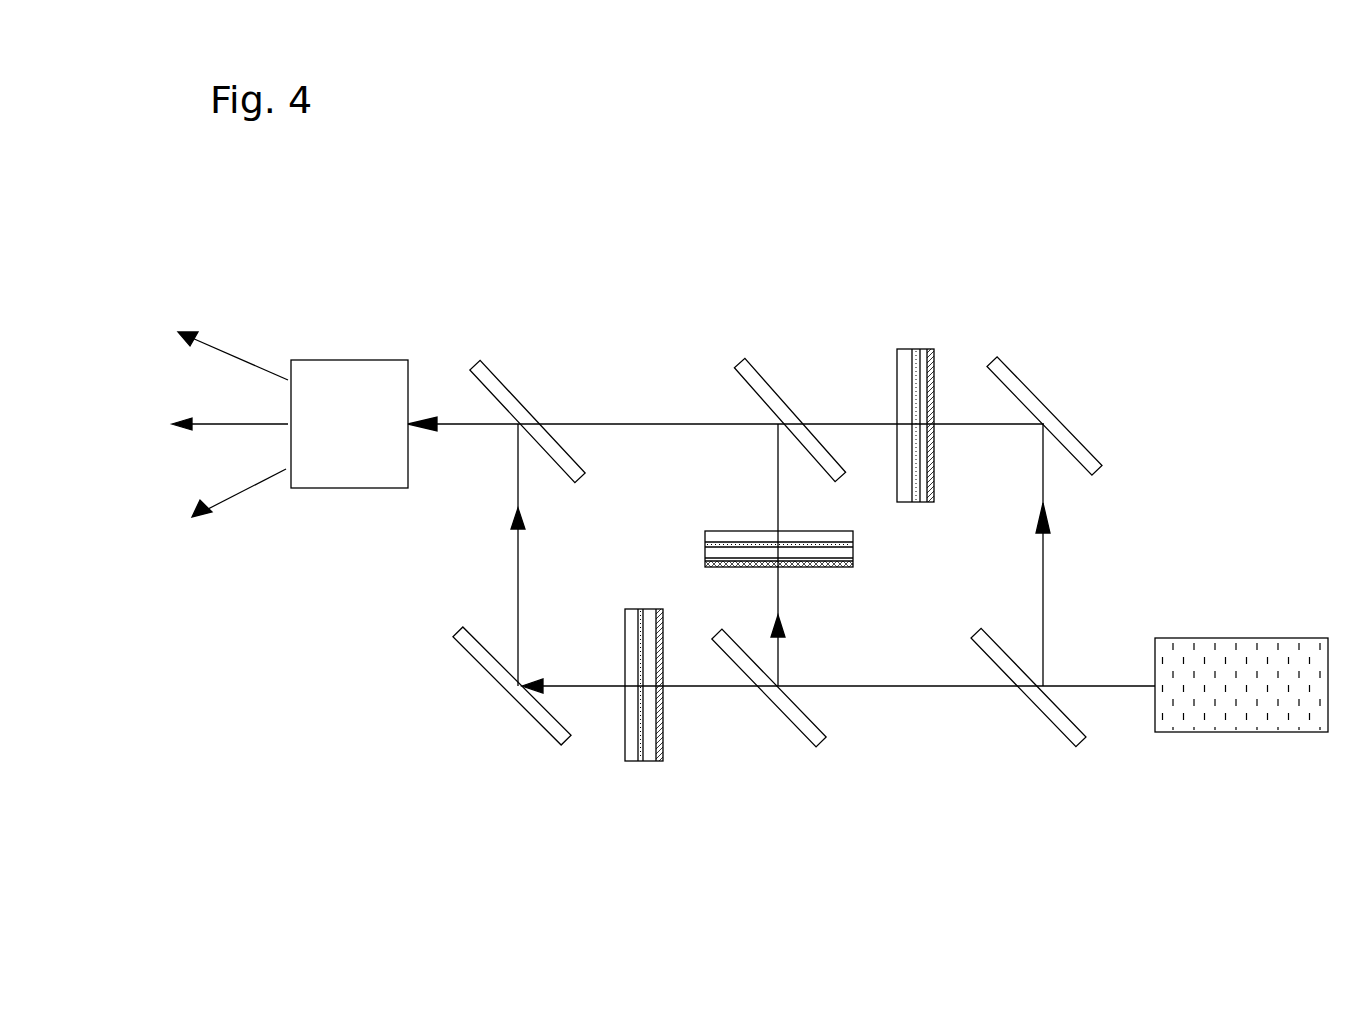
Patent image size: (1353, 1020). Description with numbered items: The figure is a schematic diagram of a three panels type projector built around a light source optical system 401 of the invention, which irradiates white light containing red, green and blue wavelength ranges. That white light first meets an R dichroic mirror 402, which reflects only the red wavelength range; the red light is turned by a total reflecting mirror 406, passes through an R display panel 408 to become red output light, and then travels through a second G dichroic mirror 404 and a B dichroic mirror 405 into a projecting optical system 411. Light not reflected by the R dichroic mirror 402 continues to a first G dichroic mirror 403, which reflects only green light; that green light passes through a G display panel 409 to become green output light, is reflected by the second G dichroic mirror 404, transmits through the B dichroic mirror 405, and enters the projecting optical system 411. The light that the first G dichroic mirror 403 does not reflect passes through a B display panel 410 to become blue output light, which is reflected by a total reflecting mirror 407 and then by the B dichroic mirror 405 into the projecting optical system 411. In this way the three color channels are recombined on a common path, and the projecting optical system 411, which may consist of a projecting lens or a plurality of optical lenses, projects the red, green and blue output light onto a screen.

The light source optical system 401 is at (1223, 637).
The R dichroic mirror 402 is at (1048, 707).
The first G dichroic mirror 403 is at (792, 707).
The second G dichroic mirror 404 is at (767, 382).
The B dichroic mirror 405 is at (497, 373).
The total reflecting mirror 406 is at (1068, 427).
The total reflecting mirror 407 is at (482, 662).
The R display panel 408 is at (913, 350).
The G display panel 409 is at (723, 531).
The B display panel 410 is at (640, 760).
The projecting optical system 411 is at (360, 359).